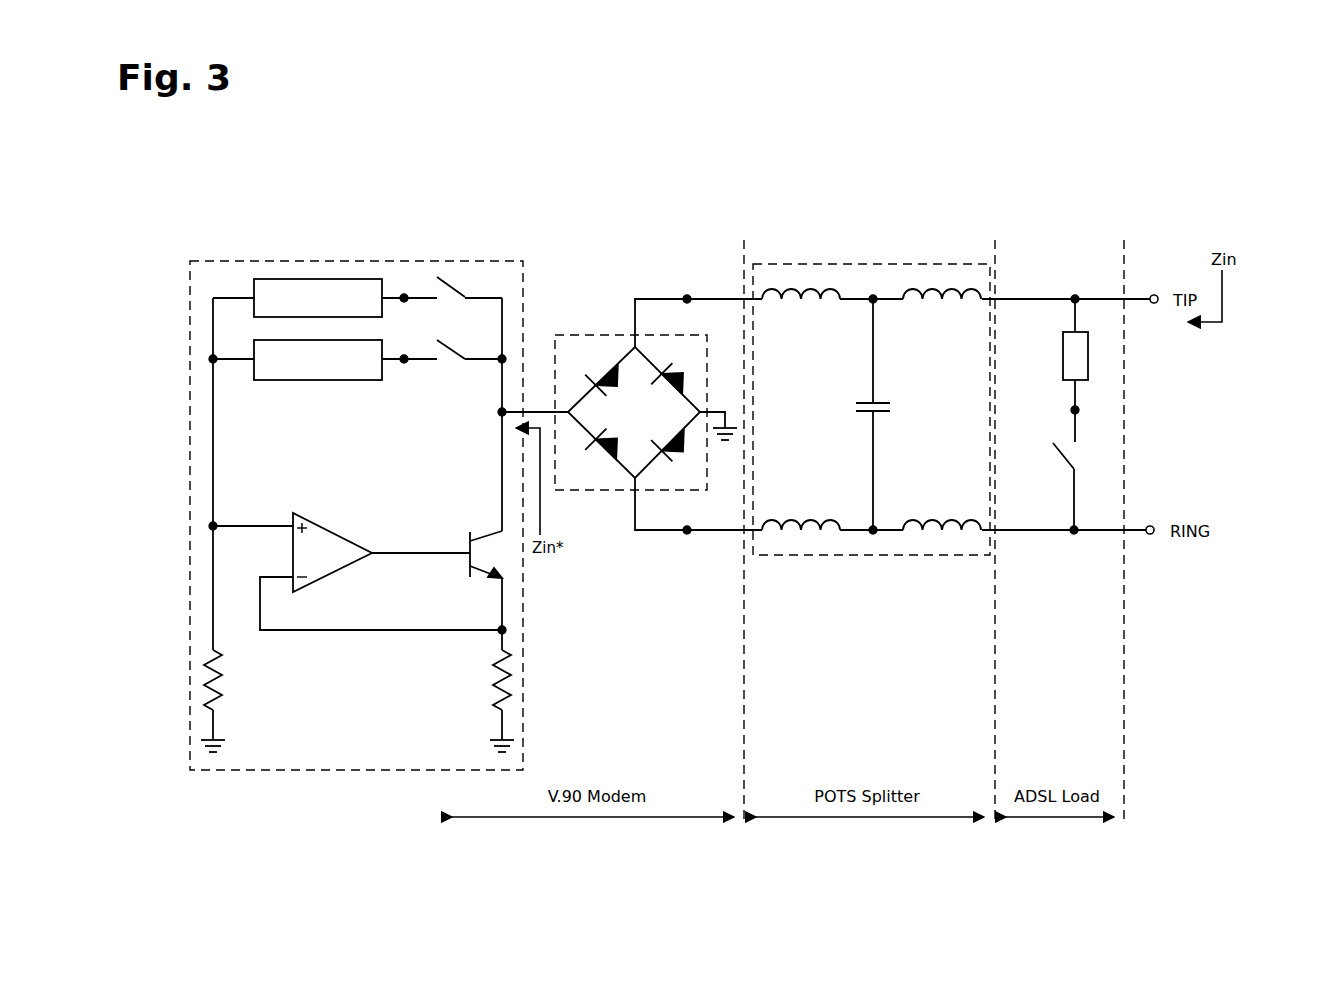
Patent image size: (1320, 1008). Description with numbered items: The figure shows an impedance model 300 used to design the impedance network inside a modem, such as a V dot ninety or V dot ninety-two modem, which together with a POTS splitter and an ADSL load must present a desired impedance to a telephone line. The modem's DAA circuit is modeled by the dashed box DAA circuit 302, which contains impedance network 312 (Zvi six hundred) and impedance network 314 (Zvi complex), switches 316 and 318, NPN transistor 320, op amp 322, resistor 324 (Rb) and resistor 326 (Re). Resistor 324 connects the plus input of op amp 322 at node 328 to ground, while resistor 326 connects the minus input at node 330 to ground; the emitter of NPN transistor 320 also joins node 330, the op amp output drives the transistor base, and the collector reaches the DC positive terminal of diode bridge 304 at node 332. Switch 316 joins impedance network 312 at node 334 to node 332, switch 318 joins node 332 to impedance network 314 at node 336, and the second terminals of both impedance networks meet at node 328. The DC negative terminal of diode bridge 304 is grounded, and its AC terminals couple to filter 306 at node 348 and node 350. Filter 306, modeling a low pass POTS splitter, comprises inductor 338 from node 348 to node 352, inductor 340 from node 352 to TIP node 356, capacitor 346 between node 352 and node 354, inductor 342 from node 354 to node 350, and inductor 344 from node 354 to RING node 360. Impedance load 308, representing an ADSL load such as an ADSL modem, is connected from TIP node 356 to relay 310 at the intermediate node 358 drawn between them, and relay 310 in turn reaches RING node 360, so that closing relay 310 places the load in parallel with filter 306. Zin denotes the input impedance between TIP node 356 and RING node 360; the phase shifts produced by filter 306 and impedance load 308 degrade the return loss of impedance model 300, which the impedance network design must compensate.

The impedance model 300 is at (1265, 115).
The DAA circuit 302 is at (453, 262).
The diode bridge 304 is at (577, 335).
The filter 306 is at (868, 264).
The impedance load 308 is at (1063, 336).
The relay 310 is at (1062, 460).
The impedance network 312 is at (313, 279).
The impedance network 314 is at (276, 381).
The switch 316 is at (452, 285).
The switch 318 is at (449, 355).
The NPN transistor 320 is at (468, 533).
The op amp 322 is at (340, 532).
The resistor 324 is at (207, 682).
The resistor 326 is at (514, 690).
The node 328 is at (211, 357).
The node 330 is at (506, 630).
The node 332 is at (498, 357).
The node 334 is at (404, 293).
The node 336 is at (403, 364).
The inductor 338 is at (810, 290).
The inductor 340 is at (923, 290).
The inductor 342 is at (788, 521).
The inductor 344 is at (938, 521).
The capacitor 346 is at (880, 402).
The node 348 is at (689, 296).
The node 350 is at (688, 534).
The node 352 is at (876, 303).
The node 354 is at (869, 529).
The TIP node 356 is at (1077, 297).
The node 358 is at (1073, 410).
The RING node 360 is at (1074, 536).